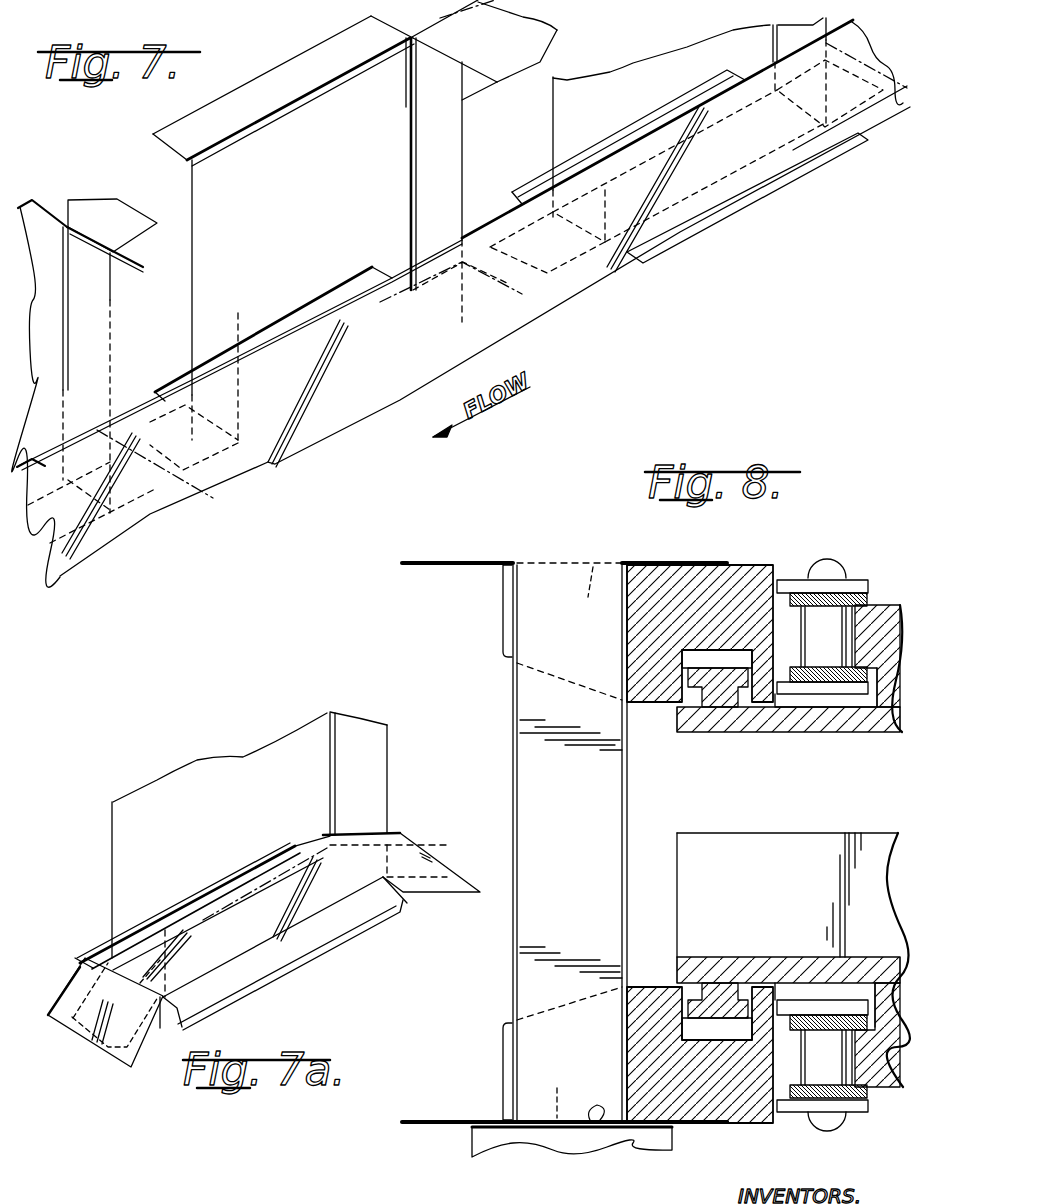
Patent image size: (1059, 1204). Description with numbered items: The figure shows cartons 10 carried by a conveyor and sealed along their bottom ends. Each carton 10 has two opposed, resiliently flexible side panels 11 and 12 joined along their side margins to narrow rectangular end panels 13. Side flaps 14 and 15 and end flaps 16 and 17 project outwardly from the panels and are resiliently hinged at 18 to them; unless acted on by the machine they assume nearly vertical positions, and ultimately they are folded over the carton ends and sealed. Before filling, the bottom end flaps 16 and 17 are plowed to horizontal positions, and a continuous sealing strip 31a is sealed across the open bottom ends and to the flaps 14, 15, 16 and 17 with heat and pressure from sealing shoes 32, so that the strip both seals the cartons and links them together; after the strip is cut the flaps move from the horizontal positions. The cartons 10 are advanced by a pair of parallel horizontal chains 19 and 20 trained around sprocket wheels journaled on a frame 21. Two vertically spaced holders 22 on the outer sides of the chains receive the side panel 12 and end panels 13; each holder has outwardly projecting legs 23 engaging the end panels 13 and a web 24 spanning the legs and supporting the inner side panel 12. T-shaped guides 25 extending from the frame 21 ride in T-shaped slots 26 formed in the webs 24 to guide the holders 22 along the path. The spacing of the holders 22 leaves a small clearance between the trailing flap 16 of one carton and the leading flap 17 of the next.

In FIG. 7, the carton 10 is at (684, 53).
In FIG. 7A, the carton 10 is at (147, 778).
In FIG. 8, the carton 10 is at (513, 690).
In FIG. 7, the side panel 11 is at (318, 213).
In FIG. 7A, the side panel 11 is at (120, 873).
In FIG. 8, the side panel 11 is at (513, 990).
In FIG. 8, the side panel 12 is at (627, 797).
In FIG. 7, the end panel 13 is at (453, 174).
In FIG. 7A, the end panel 13 is at (377, 763).
In FIG. 8, the end panel 13 is at (578, 850).
In FIG. 7, the side flap 14 is at (288, 78).
In FIG. 7A, the side flap 14 is at (202, 890).
In FIG. 8, the side flap 14 is at (445, 561).
In FIG. 7, the side flap 15 is at (478, 92).
In FIG. 7A, the side flap 15 is at (333, 940).
In FIG. 8, the side flap 15 is at (700, 562).
In FIG. 7, the end flap 16 is at (490, 40).
In FIG. 7A, the end flap 16 is at (417, 843).
In FIG. 7, the end flap 17 is at (153, 190).
In FIG. 7A, the end flap 17 is at (98, 1057).
In FIG. 8, the end flap 17 is at (569, 842).
In FIG. 7, the hinge 18 is at (408, 91).
In FIG. 8, the chain 19 is at (840, 577).
In FIG. 8, the chain 20 is at (857, 1112).
In FIG. 8, the frame 21 is at (833, 833).
In FIG. 8, the holder 22 is at (790, 563).
In FIG. 8, the leg 23 is at (503, 612).
In FIG. 8, the web 24 is at (635, 632).
In FIG. 8, the T-shaped guide 25 is at (717, 690).
In FIG. 8, the T-shaped slot 26 is at (682, 660).
In FIG. 7, the sealing strip 31a is at (580, 273).
In FIG. 7A, the sealing strip 31a is at (260, 933).
In FIG. 8, the sealing strip 31a is at (600, 1122).
In FIG. 8, the sealing shoe 32 is at (490, 1157).